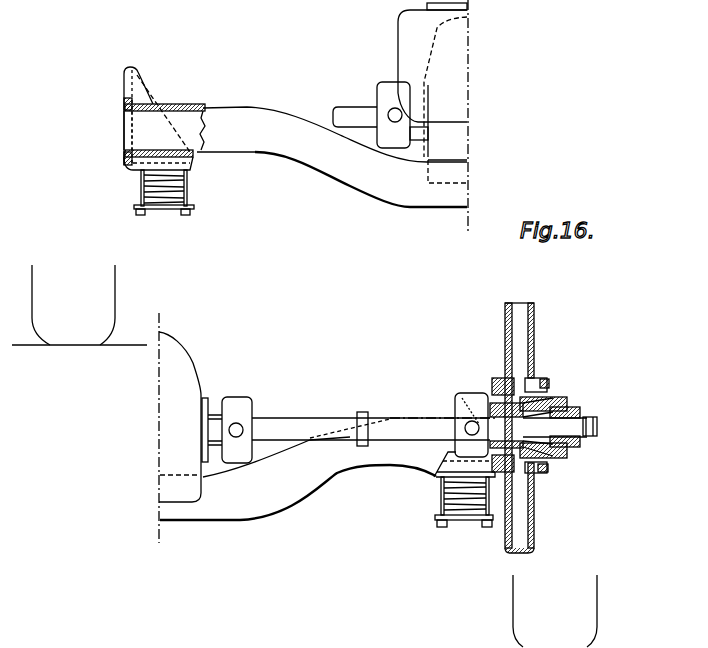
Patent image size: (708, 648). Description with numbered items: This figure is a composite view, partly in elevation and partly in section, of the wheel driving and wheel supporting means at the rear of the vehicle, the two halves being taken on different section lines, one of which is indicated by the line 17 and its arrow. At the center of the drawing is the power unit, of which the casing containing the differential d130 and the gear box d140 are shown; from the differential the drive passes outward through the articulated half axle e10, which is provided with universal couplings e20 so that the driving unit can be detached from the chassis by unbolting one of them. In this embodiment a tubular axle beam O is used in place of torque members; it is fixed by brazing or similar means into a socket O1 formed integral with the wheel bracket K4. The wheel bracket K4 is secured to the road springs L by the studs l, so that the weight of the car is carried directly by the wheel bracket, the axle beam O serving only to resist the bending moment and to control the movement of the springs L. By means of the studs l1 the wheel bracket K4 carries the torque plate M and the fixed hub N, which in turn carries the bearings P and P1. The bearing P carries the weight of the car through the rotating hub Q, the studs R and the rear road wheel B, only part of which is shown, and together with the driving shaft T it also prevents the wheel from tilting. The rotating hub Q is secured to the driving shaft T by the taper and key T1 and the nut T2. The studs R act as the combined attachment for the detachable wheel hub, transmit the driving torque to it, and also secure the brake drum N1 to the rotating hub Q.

The axle beam O is at (333, 174).
The socket O1 is at (177, 105).
The wheel bracket K4 is at (138, 92).
The road springs L is at (181, 183).
The studs l is at (183, 190).
The gear box d140 is at (415, 40).
The casing containing the differential d130 is at (183, 367).
The articulated half axle e10 is at (355, 115).
The universal coupling e20 is at (390, 96).
The rear road wheel B is at (110, 292).
The section line 17 is at (396, 336).
The torque plate M is at (505, 325).
The brake drum N1 is at (483, 211).
The studs l1 is at (512, 392).
The fixed hub N is at (534, 380).
The studs R is at (547, 385).
The bearing P is at (540, 400).
The rotating hub Q is at (560, 397).
The driving shaft T is at (566, 434).
The taper and key T1 is at (578, 416).
The nut T2 is at (580, 432).
The bearing P1 is at (556, 448).